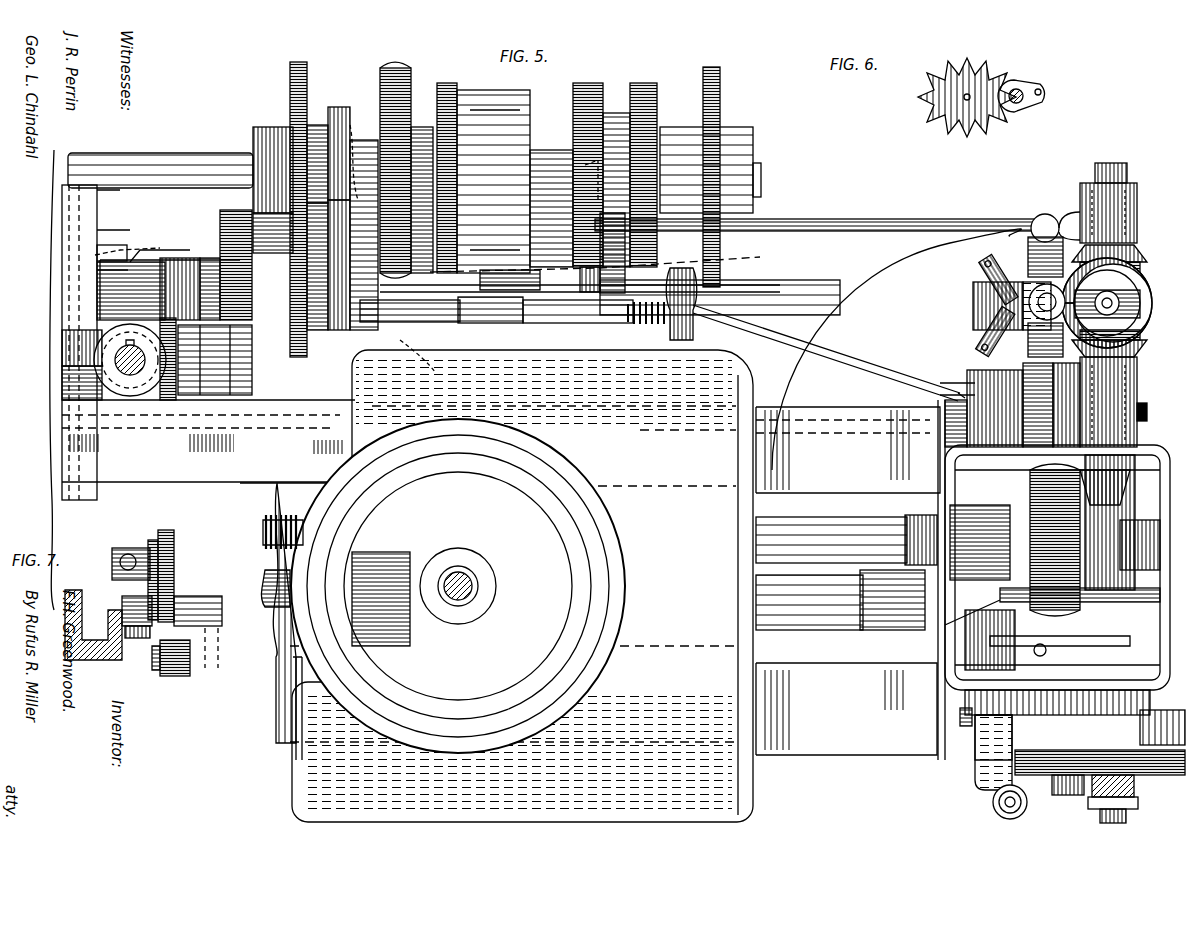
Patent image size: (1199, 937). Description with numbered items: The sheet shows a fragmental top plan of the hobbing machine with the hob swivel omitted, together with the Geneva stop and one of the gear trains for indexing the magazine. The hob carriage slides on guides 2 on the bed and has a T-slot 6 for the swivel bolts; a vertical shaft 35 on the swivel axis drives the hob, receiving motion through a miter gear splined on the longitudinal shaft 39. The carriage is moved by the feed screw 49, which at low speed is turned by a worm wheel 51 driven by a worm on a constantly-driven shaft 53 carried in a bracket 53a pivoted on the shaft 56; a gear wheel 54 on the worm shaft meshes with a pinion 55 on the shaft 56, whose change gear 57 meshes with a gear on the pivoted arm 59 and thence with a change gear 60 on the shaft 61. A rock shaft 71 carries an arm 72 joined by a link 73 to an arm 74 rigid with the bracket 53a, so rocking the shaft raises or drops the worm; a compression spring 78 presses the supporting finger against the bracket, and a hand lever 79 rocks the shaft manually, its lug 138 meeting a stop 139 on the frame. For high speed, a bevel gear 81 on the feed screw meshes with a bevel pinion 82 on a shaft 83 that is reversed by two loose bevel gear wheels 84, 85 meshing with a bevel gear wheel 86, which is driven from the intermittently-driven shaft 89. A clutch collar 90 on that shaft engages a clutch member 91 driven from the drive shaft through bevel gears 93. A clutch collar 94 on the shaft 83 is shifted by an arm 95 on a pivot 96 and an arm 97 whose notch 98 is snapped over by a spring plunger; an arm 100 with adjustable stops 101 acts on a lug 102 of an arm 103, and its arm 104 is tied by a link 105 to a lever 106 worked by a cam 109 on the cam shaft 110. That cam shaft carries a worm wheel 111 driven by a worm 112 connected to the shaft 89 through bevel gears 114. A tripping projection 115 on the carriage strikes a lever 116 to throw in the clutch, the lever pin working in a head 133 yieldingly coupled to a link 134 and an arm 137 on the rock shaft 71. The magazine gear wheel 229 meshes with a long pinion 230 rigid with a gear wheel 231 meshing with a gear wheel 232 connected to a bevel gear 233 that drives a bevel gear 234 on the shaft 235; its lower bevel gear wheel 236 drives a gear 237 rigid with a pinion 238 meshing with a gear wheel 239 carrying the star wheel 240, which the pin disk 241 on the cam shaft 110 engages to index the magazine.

In FIG. 5, the guides 2 is at (848, 581).
In FIG. 5, the T-slot 6 is at (610, 538).
In FIG. 5, the vertical shaft 35 is at (472, 586).
In FIG. 5, the shaft 39 is at (812, 612).
In FIG. 5, the feed screw 49 is at (816, 530).
In FIG. 5, the worm wheel 51 is at (945, 625).
In FIG. 5, the constantly-driven shaft 53 is at (1046, 652).
In FIG. 5, the bracket 53a is at (955, 478).
In FIG. 5, the gear wheel 54 is at (967, 428).
In FIG. 5, the pinion 55 is at (1147, 411).
In FIG. 5, the shaft 56 is at (1114, 823).
In FIG. 5, the change gear 57 is at (1170, 775).
In FIG. 5, the pivoted arm 59 is at (1160, 712).
In FIG. 5, the change gear 60 is at (975, 780).
In FIG. 5, the shaft 61 is at (1066, 795).
In FIG. 5, the rock shaft 71 is at (960, 590).
In FIG. 5, the arm 72 is at (965, 650).
In FIG. 5, the link 73 is at (965, 700).
In FIG. 5, the arm 74 is at (1130, 640).
In FIG. 5, the compression spring 78 is at (910, 520).
In FIG. 5, the hand lever 79 is at (1010, 819).
In FIG. 5, the bevel gear 81 is at (1160, 596).
In FIG. 5, the bevel pinion 82 is at (1135, 492).
In FIG. 5, the shaft 83 is at (1140, 390).
In FIG. 5, the bevel gear wheel 84 is at (1147, 348).
In FIG. 5, the bevel gear wheel 85 is at (1147, 258).
In FIG. 5, the bevel gear wheel 86 is at (1150, 288).
In FIG. 5, the intermittently-driven shaft 89 is at (795, 290).
In FIG. 5, the clutch collar 90 is at (1050, 405).
In FIG. 5, the clutch member 91 is at (158, 262).
In FIG. 5, the bevel gears 93 is at (1112, 163).
In FIG. 5, the clutch collar 94 is at (1152, 306).
In FIG. 5, the arm 95 is at (1093, 240).
In FIG. 5, the pivot 96 is at (1035, 237).
In FIG. 5, the arm 97 is at (1083, 405).
In FIG. 5, the notch 98 is at (1045, 340).
In FIG. 5, the arm 100 is at (1000, 335).
In FIG. 5, the adjustable stops 101 is at (985, 262).
In FIG. 5, the lug 102 is at (972, 298).
In FIG. 5, the arm 103 is at (1030, 298).
In FIG. 5, the arm 104 is at (1040, 214).
In FIG. 5, the link 105 is at (858, 214).
In FIG. 5, the lever 106 is at (612, 323).
In FIG. 5, the cam 109 is at (630, 95).
In FIG. 5, the cam shaft 110 is at (150, 182).
In FIG. 5, the worm wheel 111 is at (395, 68).
In FIG. 5, the worm 112 is at (330, 120).
In FIG. 5, the bevel gears 114 is at (390, 316).
In FIG. 5, the tripping projection 115 is at (760, 257).
In FIG. 5, the lever 116 is at (538, 323).
In FIG. 5, the head 133 is at (492, 323).
In FIG. 5, the link 134 is at (836, 345).
In FIG. 5, the arm 137 is at (962, 385).
In FIG. 5, the lug 138 is at (955, 730).
In FIG. 5, the stop 139 is at (960, 717).
In FIG. 7, the gear wheel 229 is at (212, 668).
In FIG. 7, the pinion 230 is at (195, 596).
In FIG. 7, the gear wheel 231 is at (150, 645).
In FIG. 7, the gear wheel 232 is at (170, 530).
In FIG. 7, the bevel gear 233 is at (153, 540).
In FIG. 7, the bevel gear 234 is at (128, 548).
In FIG. 5, the shaft 235 is at (130, 375).
In FIG. 7, the shaft 235 is at (105, 582).
In FIG. 5, the bevel gear wheel 236 is at (115, 392).
In FIG. 5, the gear 237 is at (170, 400).
In FIG. 5, the pinion 238 is at (212, 395).
In FIG. 5, the gear wheel 239 is at (224, 222).
In FIG. 5, the star wheel 240 is at (414, 362).
In FIG. 6, the star wheel 240 is at (955, 118).
In FIG. 5, the pin disk 241 is at (342, 107).
In FIG. 6, the pin disk 241 is at (1030, 80).